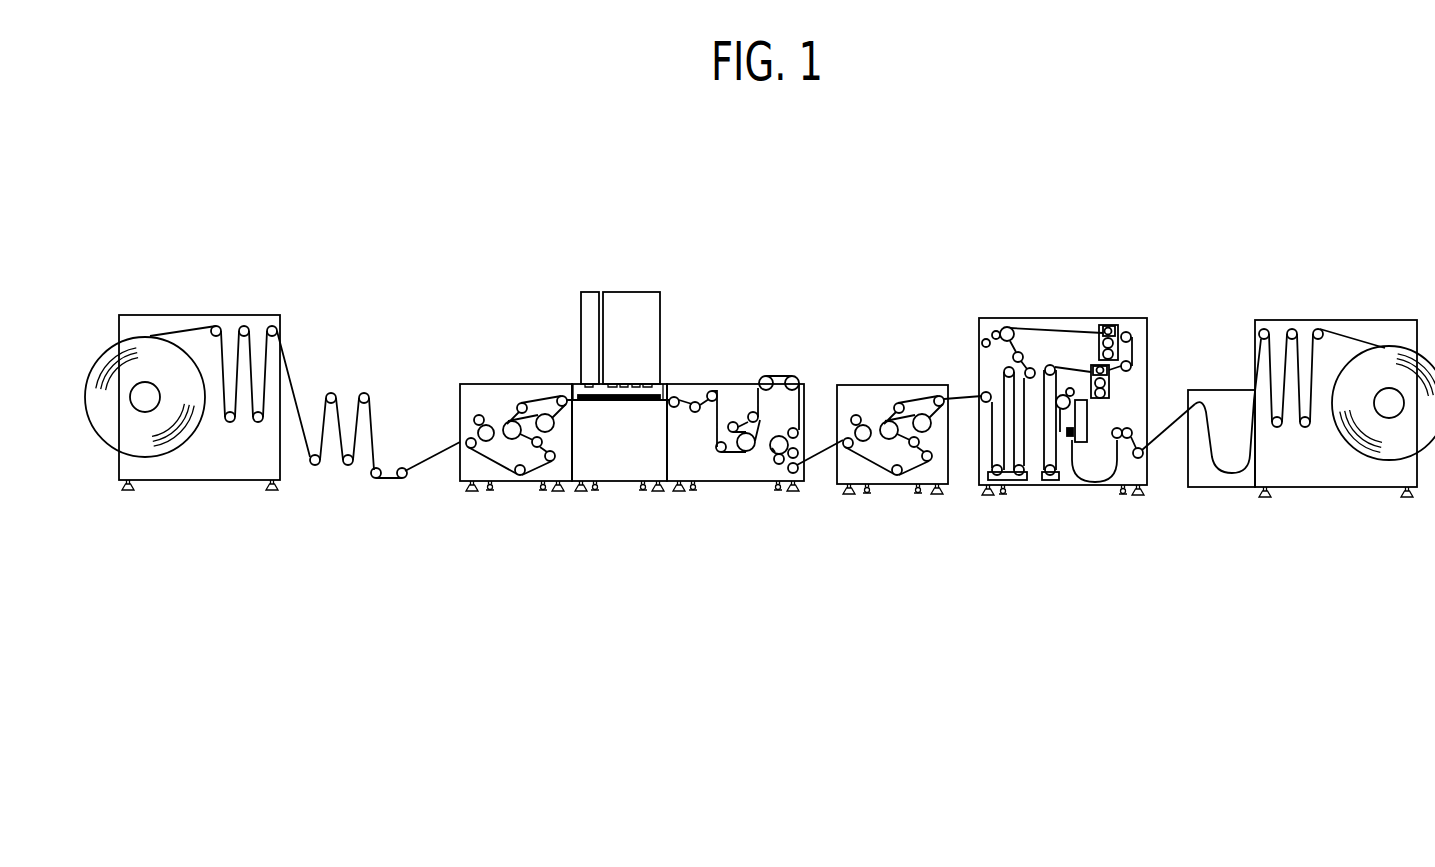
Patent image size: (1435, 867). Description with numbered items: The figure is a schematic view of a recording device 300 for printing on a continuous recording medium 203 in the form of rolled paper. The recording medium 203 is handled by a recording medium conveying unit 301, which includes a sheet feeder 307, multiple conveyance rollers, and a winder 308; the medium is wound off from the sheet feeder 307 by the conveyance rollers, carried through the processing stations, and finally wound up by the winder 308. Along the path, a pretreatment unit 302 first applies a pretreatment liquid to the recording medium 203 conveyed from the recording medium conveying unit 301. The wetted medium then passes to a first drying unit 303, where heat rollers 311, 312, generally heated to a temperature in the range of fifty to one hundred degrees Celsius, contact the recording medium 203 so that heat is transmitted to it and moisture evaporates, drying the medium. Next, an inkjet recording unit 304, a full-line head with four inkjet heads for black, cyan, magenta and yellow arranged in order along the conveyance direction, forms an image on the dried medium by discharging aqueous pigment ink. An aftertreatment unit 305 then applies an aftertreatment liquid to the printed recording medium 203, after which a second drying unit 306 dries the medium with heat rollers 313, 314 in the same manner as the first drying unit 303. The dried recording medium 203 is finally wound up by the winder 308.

The recording device 300 is at (764, 266).
The winder 308 is at (175, 315).
The second drying unit 306 is at (537, 431).
The aftertreatment unit 305 is at (590, 292).
The inkjet recording unit 304 is at (643, 292).
The recording medium 203 is at (660, 397).
The heat roller 313 is at (553, 426).
The heat roller 314 is at (512, 440).
The first drying unit 303 is at (906, 433).
The heat roller 312 is at (889, 440).
The heat roller 311 is at (931, 428).
The pretreatment unit 302 is at (1021, 318).
The sheet feeder 307 is at (1345, 385).
The recording medium conveying unit 301 is at (1360, 336).